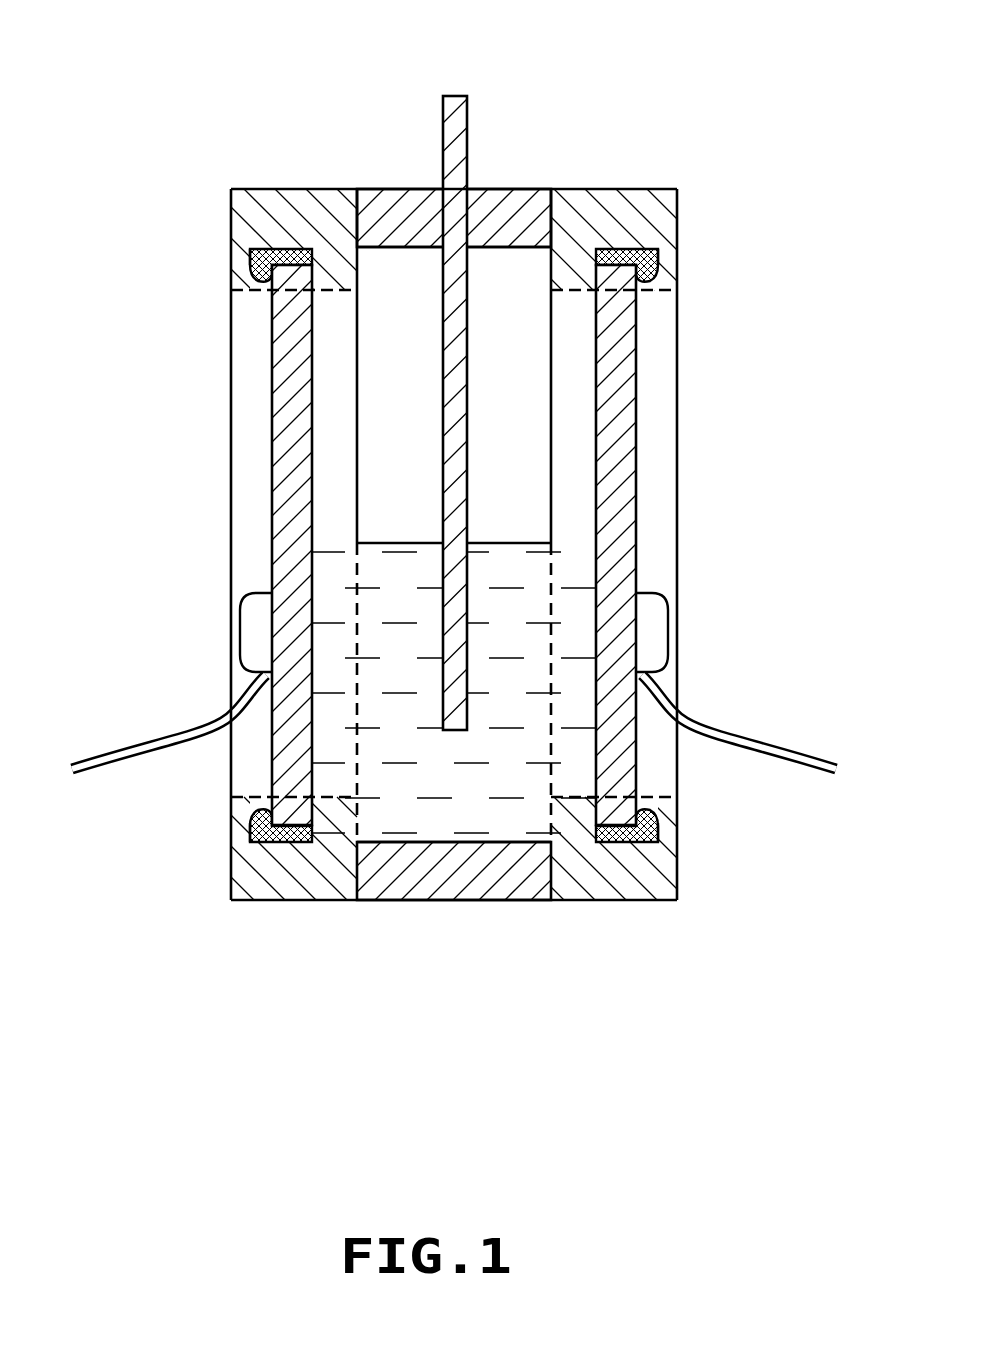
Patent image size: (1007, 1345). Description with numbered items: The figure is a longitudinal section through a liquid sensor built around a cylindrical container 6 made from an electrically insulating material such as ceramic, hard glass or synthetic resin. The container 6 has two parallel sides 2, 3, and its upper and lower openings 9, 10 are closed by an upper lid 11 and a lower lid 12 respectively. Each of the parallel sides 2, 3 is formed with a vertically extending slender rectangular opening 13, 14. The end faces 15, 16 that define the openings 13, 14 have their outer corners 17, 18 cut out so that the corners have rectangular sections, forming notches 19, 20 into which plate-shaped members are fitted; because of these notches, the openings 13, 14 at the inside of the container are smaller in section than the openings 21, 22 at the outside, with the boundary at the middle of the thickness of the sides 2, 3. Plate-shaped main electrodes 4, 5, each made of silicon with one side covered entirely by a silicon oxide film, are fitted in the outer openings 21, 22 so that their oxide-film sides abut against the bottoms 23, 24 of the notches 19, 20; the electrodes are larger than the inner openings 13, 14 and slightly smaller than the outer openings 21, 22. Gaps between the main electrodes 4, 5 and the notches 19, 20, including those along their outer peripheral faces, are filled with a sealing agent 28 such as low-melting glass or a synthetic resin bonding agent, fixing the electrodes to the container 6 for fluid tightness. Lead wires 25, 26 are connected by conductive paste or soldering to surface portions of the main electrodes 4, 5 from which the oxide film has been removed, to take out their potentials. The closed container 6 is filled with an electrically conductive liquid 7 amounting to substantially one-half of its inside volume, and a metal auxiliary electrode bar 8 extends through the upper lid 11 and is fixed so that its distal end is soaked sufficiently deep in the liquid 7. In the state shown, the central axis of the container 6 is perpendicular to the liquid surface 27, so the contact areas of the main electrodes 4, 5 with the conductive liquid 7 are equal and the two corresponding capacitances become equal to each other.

The parallel side 2 is at (230, 224).
The parallel side 3 is at (678, 217).
The plate-shaped main electrode 4 is at (295, 381).
The plate-shaped main electrode 5 is at (613, 386).
The cylindrical container 6 is at (272, 203).
The conductive liquid 7 is at (477, 807).
The metal auxiliary electrode bar 8 is at (467, 97).
The upper opening 9 is at (412, 273).
The lower opening 10 is at (427, 830).
The upper lid 11 is at (510, 200).
The lower lid 12 is at (443, 887).
The opening 13 is at (330, 433).
The opening 14 is at (577, 433).
The end face 15 is at (290, 327).
The end face 16 is at (603, 328).
The outer corner 17 is at (230, 291).
The outer corner 18 is at (678, 292).
The notch 19 is at (242, 277).
The notch 20 is at (665, 275).
The opening 21 is at (252, 510).
The opening 22 is at (657, 512).
The bottom of notch 23 is at (313, 267).
The bottom of notch 24 is at (603, 328).
The lead wire 25 is at (205, 721).
The lead wire 26 is at (703, 724).
The liquid surface 27 is at (518, 543).
The sealing agent 28 is at (230, 249).